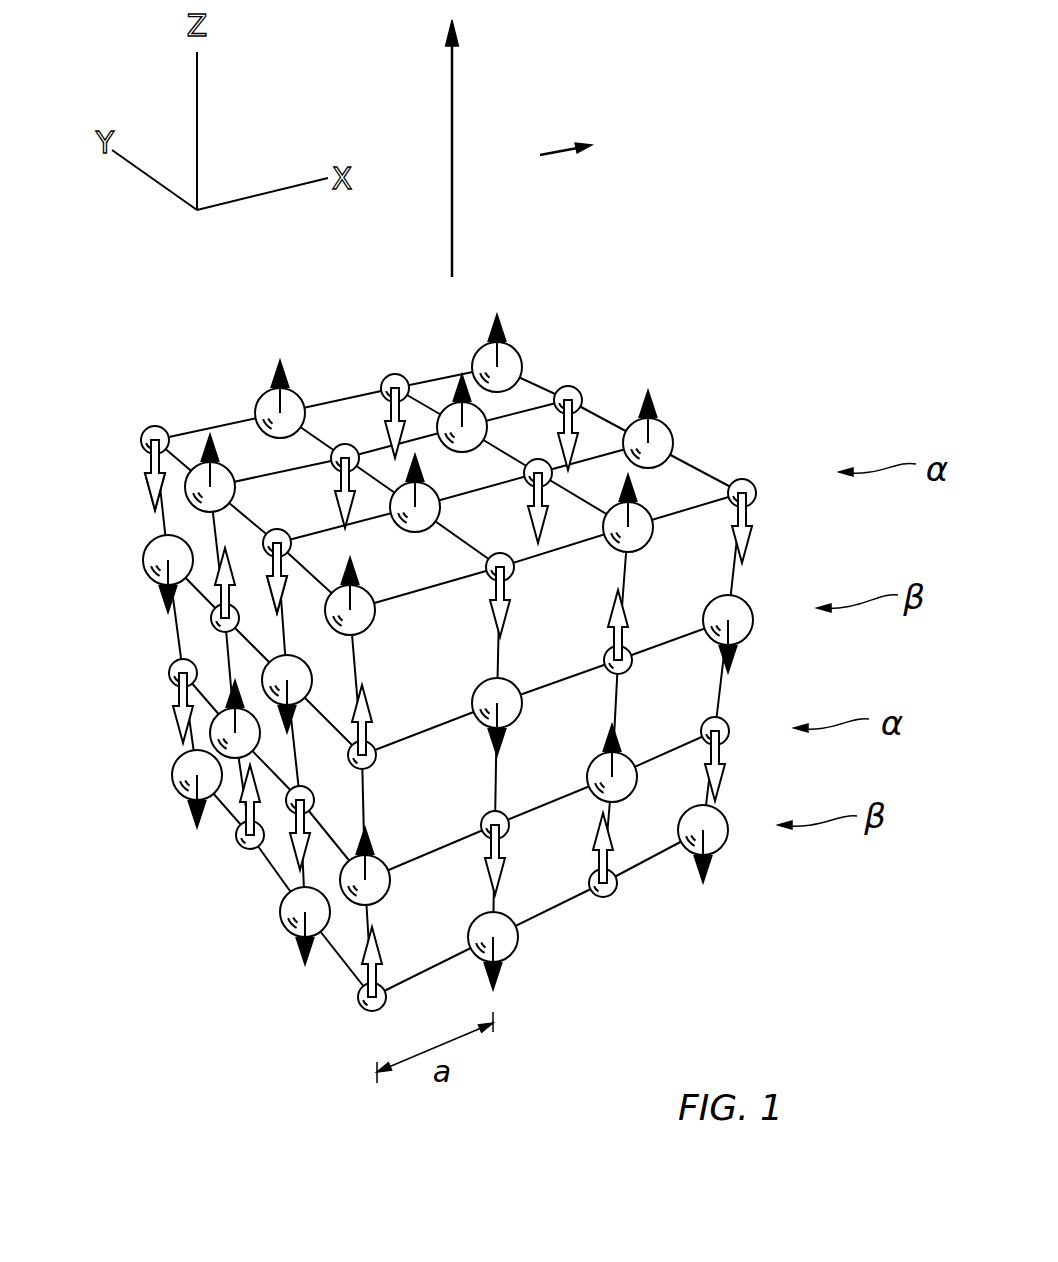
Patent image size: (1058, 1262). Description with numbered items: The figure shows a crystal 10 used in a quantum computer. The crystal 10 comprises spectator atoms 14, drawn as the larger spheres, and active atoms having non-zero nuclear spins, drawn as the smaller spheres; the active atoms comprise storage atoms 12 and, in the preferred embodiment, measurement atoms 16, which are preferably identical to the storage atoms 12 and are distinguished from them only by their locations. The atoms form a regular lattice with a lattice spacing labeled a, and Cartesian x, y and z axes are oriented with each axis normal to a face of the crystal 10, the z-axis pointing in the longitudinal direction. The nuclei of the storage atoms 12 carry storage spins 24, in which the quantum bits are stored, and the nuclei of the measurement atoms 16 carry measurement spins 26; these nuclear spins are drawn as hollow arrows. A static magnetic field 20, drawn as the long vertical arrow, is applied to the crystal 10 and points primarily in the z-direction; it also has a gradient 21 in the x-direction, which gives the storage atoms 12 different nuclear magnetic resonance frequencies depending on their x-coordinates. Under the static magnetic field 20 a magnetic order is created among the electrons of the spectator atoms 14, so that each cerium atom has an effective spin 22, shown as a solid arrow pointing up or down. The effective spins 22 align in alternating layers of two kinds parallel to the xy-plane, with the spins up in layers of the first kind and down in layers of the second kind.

The crystal 10 is at (458, 648).
The storage atoms 12 is at (155, 424).
The spectator atoms 14 is at (513, 345).
The measurement atoms 16 is at (349, 748).
The static magnetic field 20 is at (452, 207).
The gradient 21 is at (557, 153).
The effective spin 22 is at (740, 656).
The storage spins 24 is at (273, 593).
The measurement spins 26 is at (612, 612).